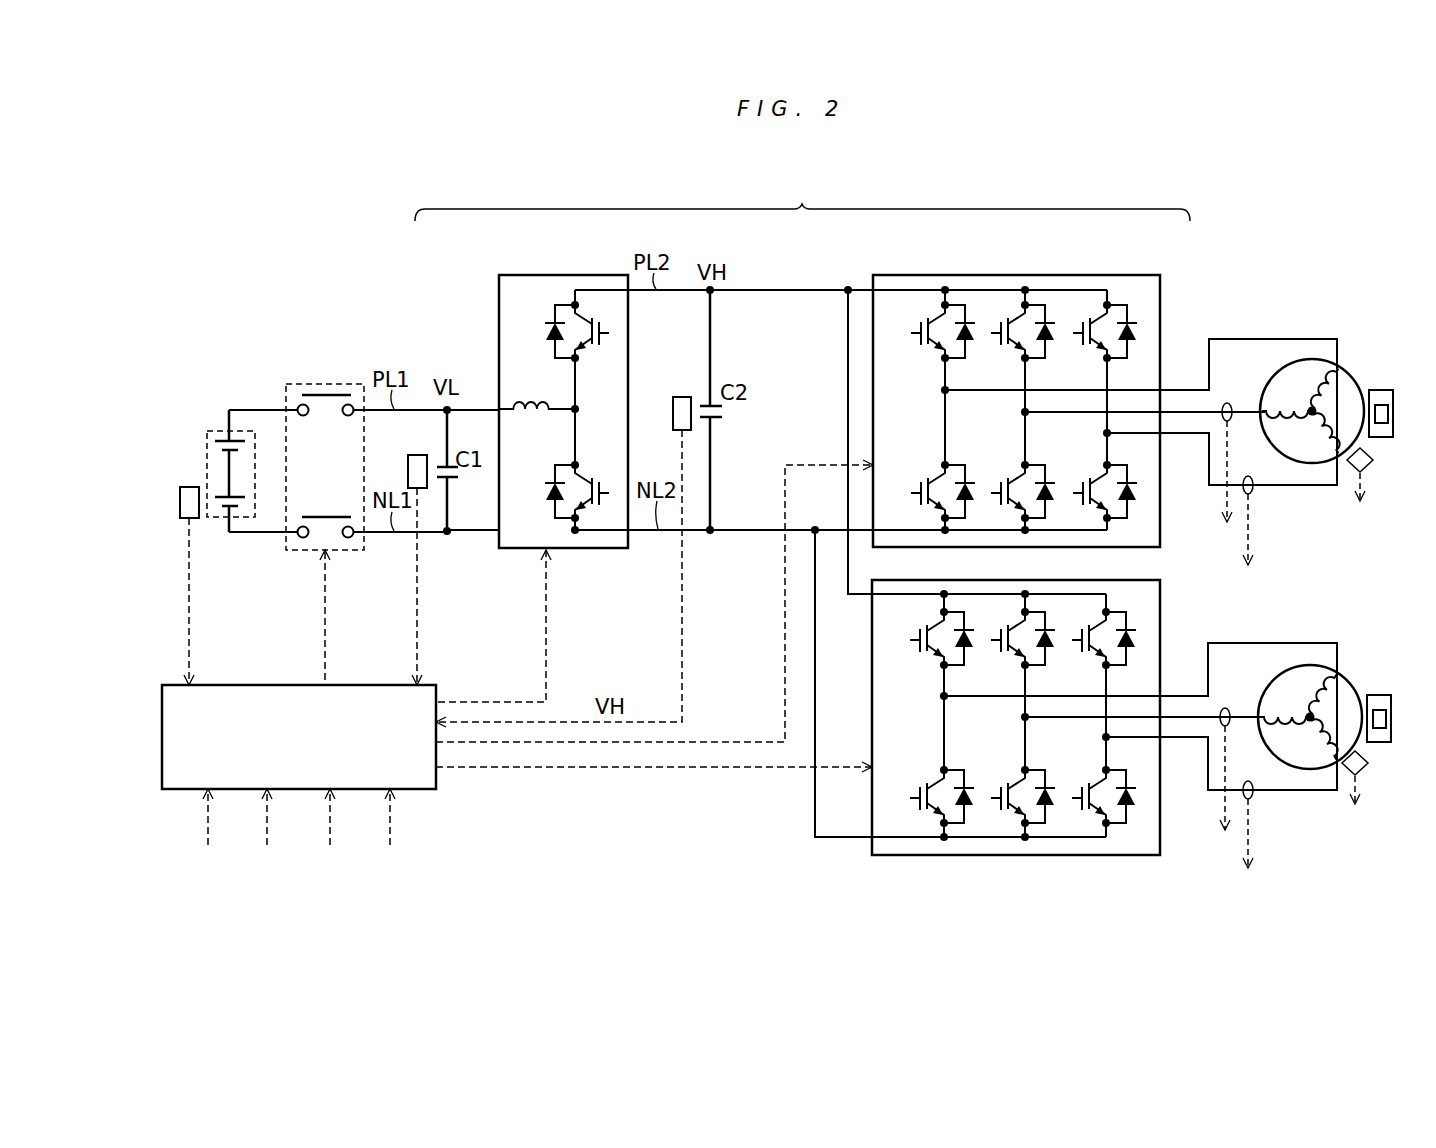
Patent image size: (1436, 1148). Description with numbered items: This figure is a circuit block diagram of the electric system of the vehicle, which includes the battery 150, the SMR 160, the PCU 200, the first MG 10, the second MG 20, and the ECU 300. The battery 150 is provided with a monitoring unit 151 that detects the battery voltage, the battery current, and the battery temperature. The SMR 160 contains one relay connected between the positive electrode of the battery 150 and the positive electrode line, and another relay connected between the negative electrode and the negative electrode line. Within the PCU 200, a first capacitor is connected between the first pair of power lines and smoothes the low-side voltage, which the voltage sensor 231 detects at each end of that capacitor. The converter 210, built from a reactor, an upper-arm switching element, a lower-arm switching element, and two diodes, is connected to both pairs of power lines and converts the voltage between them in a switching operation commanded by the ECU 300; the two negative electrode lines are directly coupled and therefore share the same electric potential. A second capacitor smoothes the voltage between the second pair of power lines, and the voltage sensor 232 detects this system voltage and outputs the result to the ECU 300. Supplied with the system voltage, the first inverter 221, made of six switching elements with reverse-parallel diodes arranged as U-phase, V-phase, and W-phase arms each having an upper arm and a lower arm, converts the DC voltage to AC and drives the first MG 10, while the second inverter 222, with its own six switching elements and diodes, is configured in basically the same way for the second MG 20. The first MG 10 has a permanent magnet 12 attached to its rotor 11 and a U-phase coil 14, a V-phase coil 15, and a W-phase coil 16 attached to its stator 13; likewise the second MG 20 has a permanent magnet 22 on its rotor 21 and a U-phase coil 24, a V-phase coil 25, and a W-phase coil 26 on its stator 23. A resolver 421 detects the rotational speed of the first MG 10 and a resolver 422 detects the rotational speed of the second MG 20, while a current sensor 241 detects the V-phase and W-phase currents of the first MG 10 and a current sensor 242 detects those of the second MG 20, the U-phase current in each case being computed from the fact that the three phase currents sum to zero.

The first MG 10 is at (1190, 437).
The rotor 11 is at (1393, 400).
The permanent magnet 12 is at (1388, 421).
The stator 13 is at (1350, 376).
The U-phase coil 14 is at (1323, 389).
The V-phase coil 15 is at (1290, 416).
The W-phase coil 16 is at (1326, 436).
The second MG 20 is at (1190, 747).
The rotor 21 is at (1391, 705).
The permanent magnet 22 is at (1386, 725).
The stator 23 is at (1349, 683).
The U-phase coil 24 is at (1321, 697).
The V-phase coil 25 is at (1289, 722).
The W-phase coil 26 is at (1325, 740).
The battery 150 is at (216, 431).
The monitoring unit 151 is at (190, 487).
The SMR 160 is at (334, 384).
The PCU 200 is at (802, 199).
The converter 210 is at (548, 275).
The first inverter 221 is at (1093, 275).
The second inverter 222 is at (1093, 580).
The voltage sensor 231 is at (418, 455).
The voltage sensor 232 is at (684, 397).
The current sensor 241 is at (1229, 400).
The current sensor 242 is at (1227, 706).
The ECU 300 is at (248, 685).
The resolver 421 is at (1371, 465).
The resolver 422 is at (1368, 768).